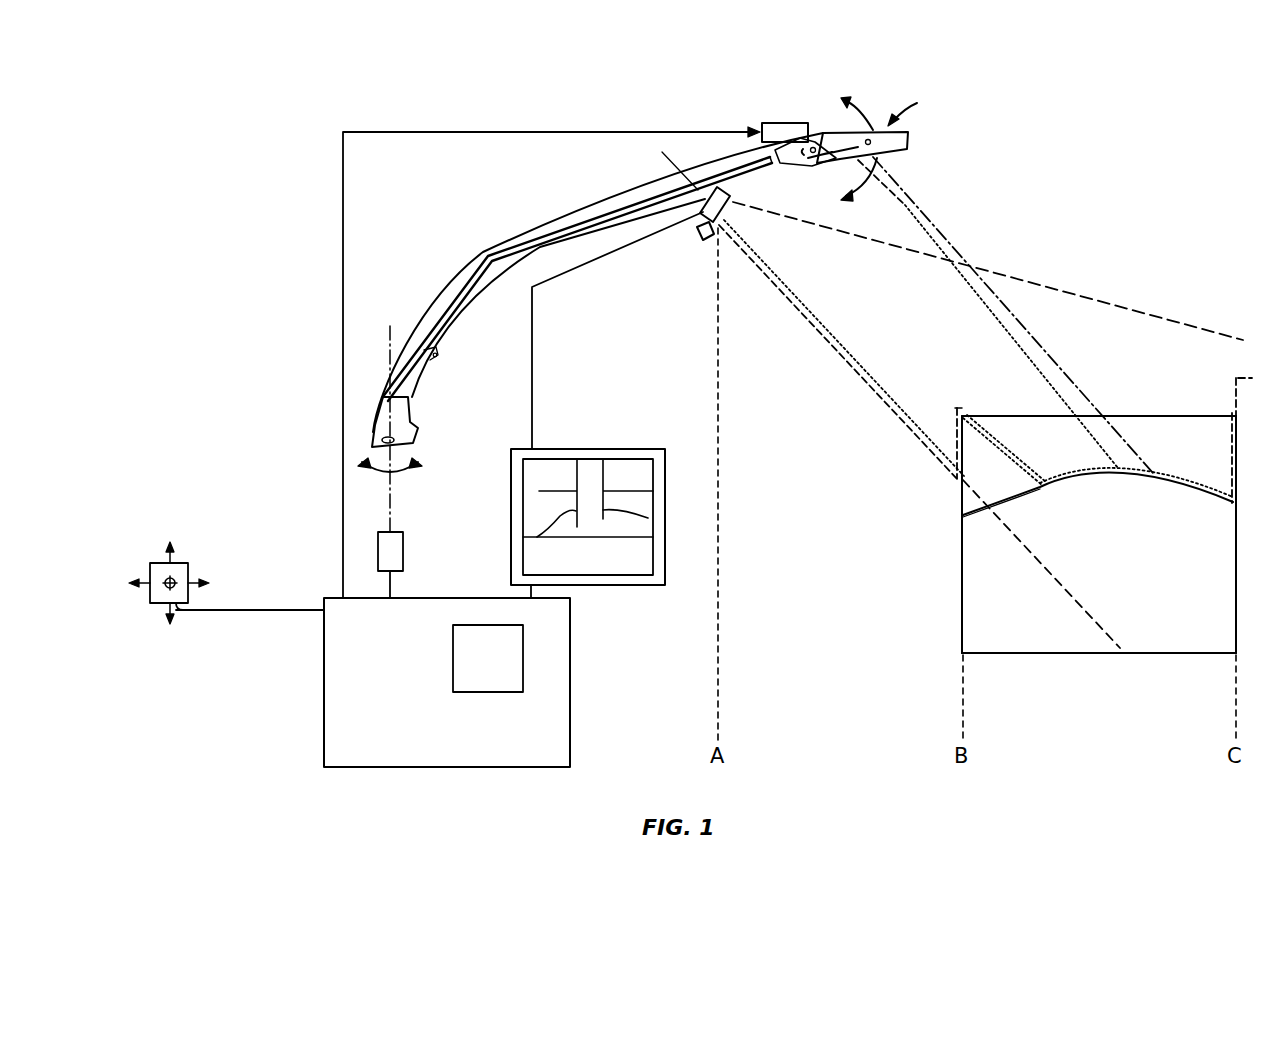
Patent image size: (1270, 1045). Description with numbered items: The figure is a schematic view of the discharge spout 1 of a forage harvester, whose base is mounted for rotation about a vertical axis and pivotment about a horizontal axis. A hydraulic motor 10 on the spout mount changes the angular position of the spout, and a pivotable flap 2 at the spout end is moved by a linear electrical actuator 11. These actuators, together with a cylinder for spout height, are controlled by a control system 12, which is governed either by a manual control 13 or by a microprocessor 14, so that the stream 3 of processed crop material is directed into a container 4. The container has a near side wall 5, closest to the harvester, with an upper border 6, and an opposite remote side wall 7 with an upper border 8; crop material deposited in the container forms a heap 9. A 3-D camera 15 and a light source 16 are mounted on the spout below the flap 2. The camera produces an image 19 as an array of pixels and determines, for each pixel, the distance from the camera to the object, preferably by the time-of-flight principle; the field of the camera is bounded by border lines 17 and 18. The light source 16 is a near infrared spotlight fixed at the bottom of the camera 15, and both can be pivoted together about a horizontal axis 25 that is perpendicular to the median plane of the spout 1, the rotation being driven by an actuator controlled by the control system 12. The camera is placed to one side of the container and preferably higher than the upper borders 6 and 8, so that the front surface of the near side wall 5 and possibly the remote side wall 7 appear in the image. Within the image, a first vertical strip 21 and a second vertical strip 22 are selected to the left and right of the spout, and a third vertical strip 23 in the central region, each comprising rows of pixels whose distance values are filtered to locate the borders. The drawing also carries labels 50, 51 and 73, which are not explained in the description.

The discharge spout 1 is at (512, 235).
The pivotable flap 2 is at (882, 181).
The stream of processed crop material 3 is at (938, 242).
The container 4 is at (1063, 655).
The near side wall 5 is at (962, 636).
The upper border 6 is at (957, 410).
The remote side wall 7 is at (1236, 618).
The upper border 8 is at (1236, 378).
The heap 9 is at (1168, 478).
The hydraulic motor 10 is at (403, 556).
The linear electrical actuator 11 is at (788, 123).
The control system 12 is at (324, 684).
The manual control 13 is at (176, 566).
The microprocessor 14 is at (453, 656).
The 3-D camera 15 is at (702, 222).
The light source 16 is at (704, 241).
The border line 17 is at (852, 348).
The border line 18 is at (1042, 290).
The image 19 is at (610, 450).
The first vertical strip 21 is at (1056, 490).
The second vertical strip 22 is at (1093, 480).
The third vertical strip 23 is at (1085, 431).
The horizontal axis 25 is at (667, 163).
The container 50 is at (962, 549).
The container top 51 is at (1131, 415).
The fitting 73 is at (434, 354).